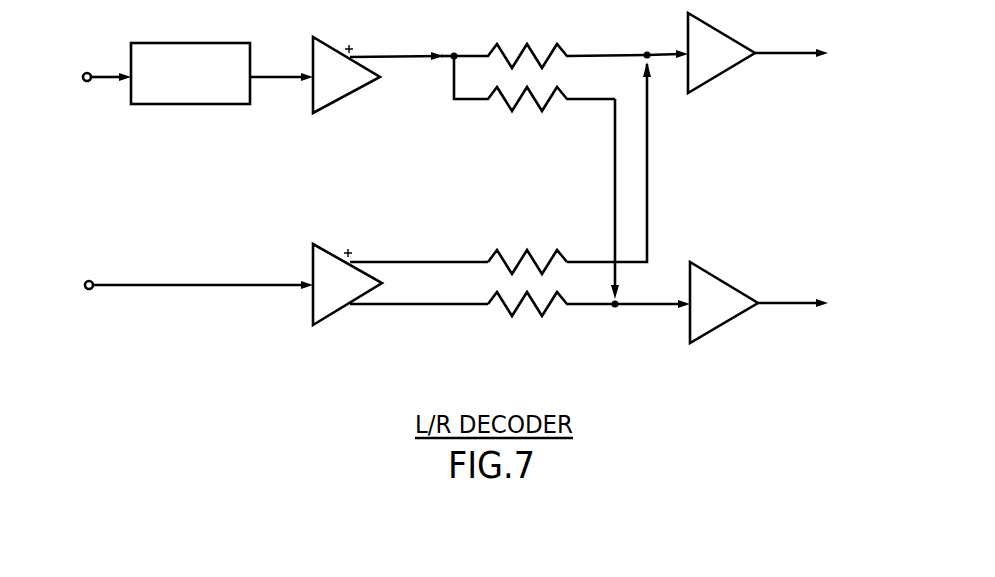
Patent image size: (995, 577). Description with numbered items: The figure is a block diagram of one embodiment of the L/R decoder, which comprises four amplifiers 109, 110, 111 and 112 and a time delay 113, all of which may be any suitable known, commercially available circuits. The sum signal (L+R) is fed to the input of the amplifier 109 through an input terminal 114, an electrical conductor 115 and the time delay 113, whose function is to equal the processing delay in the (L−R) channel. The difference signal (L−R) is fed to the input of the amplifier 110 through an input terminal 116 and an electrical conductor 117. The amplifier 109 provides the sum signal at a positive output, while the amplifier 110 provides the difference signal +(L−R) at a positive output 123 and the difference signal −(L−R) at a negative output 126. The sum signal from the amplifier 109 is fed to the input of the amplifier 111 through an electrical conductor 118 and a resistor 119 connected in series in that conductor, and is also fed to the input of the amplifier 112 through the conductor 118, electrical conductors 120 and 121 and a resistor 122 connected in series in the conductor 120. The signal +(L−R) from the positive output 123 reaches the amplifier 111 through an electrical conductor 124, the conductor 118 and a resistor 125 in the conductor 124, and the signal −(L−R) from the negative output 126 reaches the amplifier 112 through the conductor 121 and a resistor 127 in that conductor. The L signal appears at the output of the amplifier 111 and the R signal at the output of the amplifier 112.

The amplifier 109 is at (345, 106).
The amplifier 110 is at (309, 312).
The amplifier 111 is at (714, 28).
The amplifier 112 is at (722, 322).
The time delay 113 is at (207, 104).
The input terminal 114 is at (86, 82).
The electrical conductor 115 is at (108, 72).
The input terminal 116 is at (87, 290).
The electrical conductor 117 is at (162, 287).
The electrical conductor 118 is at (407, 55).
The resistor 119 is at (548, 44).
The electrical conductor 120 is at (614, 166).
The electrical conductor 121 is at (598, 308).
The resistor 122 is at (548, 89).
The positive output 123 is at (360, 265).
The electrical conductor 124 is at (648, 166).
The resistor 125 is at (547, 250).
The negative output 126 is at (362, 303).
The resistor 127 is at (547, 292).